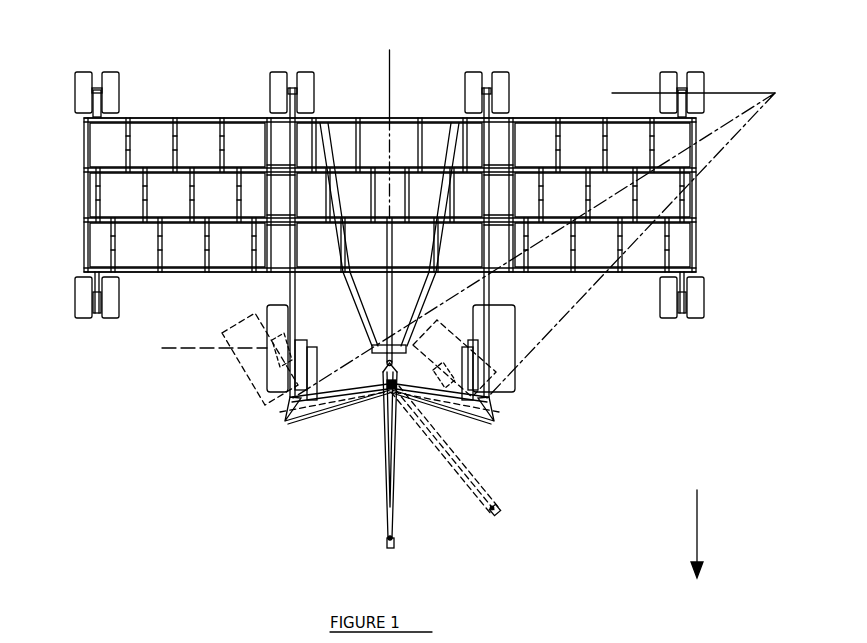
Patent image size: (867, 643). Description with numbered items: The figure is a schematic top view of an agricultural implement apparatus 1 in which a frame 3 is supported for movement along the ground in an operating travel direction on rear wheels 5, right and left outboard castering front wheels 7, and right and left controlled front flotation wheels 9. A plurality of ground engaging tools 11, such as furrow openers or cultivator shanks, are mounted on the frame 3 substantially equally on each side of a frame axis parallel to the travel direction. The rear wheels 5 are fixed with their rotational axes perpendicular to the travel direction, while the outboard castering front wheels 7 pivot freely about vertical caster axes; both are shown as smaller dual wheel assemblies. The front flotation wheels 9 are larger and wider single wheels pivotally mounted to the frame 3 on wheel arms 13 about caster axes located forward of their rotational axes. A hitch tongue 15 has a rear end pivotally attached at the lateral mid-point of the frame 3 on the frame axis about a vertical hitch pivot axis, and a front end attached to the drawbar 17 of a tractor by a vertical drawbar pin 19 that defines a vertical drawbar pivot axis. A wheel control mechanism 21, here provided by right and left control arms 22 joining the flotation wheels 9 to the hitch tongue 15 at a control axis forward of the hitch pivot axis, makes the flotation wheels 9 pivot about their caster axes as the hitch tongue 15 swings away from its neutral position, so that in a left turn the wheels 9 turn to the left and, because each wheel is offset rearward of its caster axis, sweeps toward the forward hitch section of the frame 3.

The agricultural implement apparatus 1 is at (58, 57).
The frame 3 is at (590, 115).
The rear wheels 5 is at (707, 83).
The outboard castering front wheels 7 is at (707, 302).
The front flotation wheels 9 is at (268, 395).
The ground engaging tools 11 is at (210, 128).
The wheel arms 13 is at (500, 293).
The hitch tongue 15 is at (380, 472).
The drawbar 17 is at (395, 546).
The drawbar pin 19 is at (386, 540).
The wheel control mechanism 21 is at (335, 452).
The control arms 22 is at (452, 408).